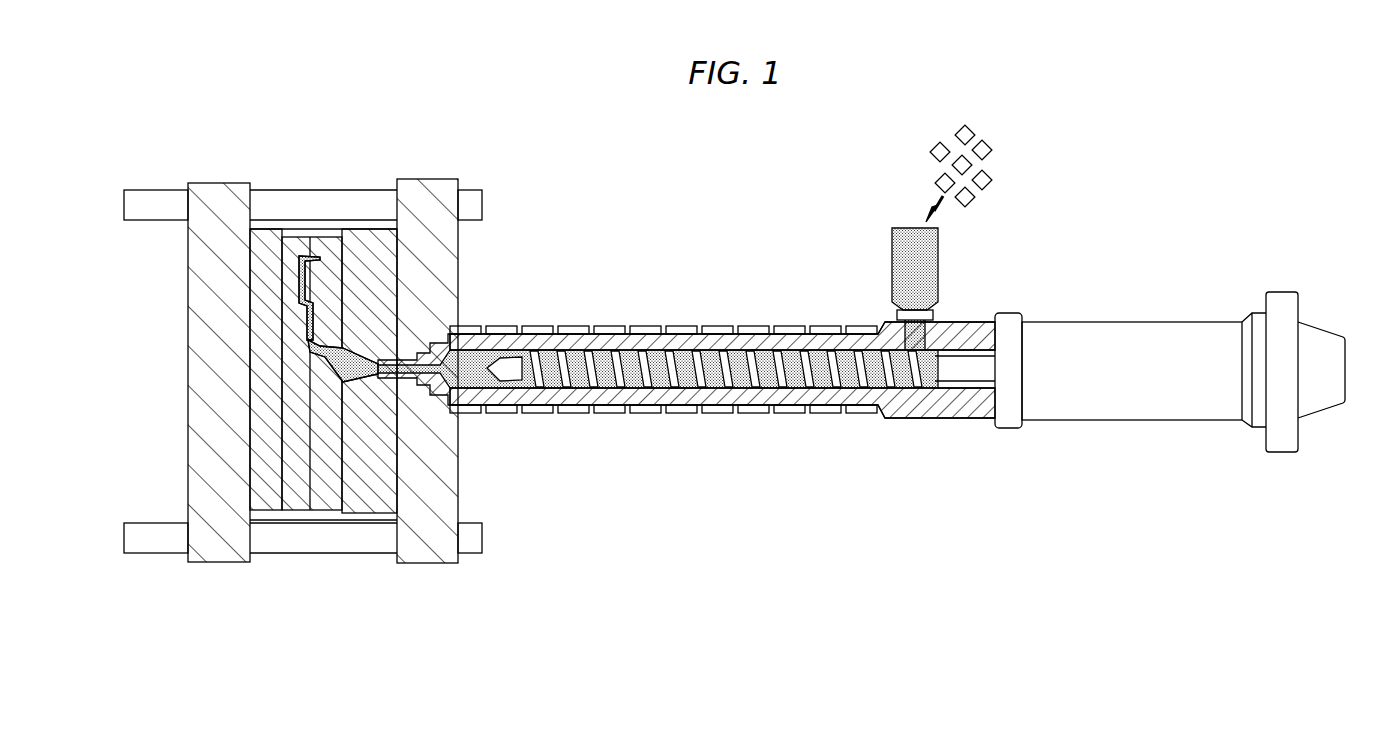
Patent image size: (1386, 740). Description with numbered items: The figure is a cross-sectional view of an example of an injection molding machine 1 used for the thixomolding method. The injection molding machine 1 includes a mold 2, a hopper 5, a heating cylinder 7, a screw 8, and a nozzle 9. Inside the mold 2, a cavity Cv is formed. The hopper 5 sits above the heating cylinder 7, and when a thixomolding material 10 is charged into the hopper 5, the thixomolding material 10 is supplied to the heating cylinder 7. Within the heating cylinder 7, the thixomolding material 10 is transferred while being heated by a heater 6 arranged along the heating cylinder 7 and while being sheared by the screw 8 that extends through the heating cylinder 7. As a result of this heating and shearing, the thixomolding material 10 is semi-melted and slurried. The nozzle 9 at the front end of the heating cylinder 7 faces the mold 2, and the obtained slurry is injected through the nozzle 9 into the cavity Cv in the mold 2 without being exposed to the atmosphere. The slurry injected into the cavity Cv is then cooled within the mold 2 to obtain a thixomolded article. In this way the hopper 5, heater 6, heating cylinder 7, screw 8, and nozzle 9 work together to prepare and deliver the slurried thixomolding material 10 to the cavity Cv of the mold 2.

The injection molding machine 1 is at (861, 304).
The mold 2 is at (303, 390).
The cavity Cv is at (311, 259).
The hopper 5 is at (912, 228).
The heater 6 is at (797, 410).
The heating cylinder 7 is at (728, 402).
The screw 8 is at (503, 360).
The nozzle 9 is at (432, 398).
The thixomolding material 10 is at (998, 162).